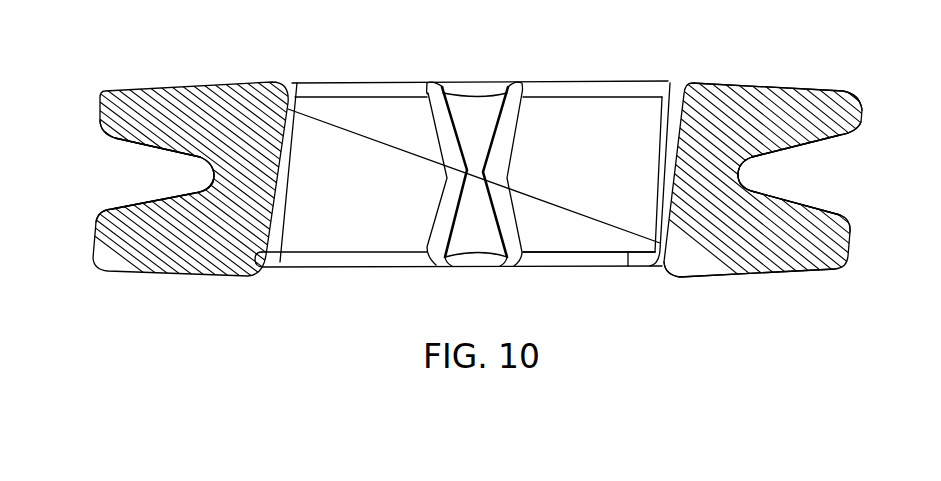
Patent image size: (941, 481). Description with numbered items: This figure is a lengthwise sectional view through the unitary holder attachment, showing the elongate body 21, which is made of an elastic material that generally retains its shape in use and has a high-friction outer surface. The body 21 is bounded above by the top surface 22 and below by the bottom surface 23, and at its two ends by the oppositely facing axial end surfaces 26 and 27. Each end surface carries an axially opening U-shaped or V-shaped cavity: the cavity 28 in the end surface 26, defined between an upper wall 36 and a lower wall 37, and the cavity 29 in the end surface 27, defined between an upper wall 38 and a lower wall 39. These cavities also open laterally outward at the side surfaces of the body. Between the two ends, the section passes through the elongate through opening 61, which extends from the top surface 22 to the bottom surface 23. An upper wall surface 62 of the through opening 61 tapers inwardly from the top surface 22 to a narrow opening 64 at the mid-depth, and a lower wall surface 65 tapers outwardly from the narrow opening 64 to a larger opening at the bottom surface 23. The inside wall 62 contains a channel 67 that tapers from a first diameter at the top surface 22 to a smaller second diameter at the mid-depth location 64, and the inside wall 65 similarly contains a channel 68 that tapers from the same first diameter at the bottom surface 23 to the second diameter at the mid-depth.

The elongate body 21 is at (683, 80).
The top surface 22 is at (776, 84).
The bottom surface 23 is at (698, 280).
The axial end surface 26 is at (77, 177).
The axial end surface 27 is at (870, 174).
The cavity 28 is at (175, 172).
The cavity 29 is at (775, 170).
The upper wall 36 is at (127, 140).
The lower wall 37 is at (127, 207).
The upper wall 38 is at (840, 145).
The lower wall 39 is at (807, 203).
The through opening 61 is at (388, 98).
The upper wall surface 62 is at (572, 130).
The narrow opening 64 is at (473, 172).
The lower wall surface 65 is at (570, 232).
The channel 67 is at (478, 110).
The channel 68 is at (475, 232).